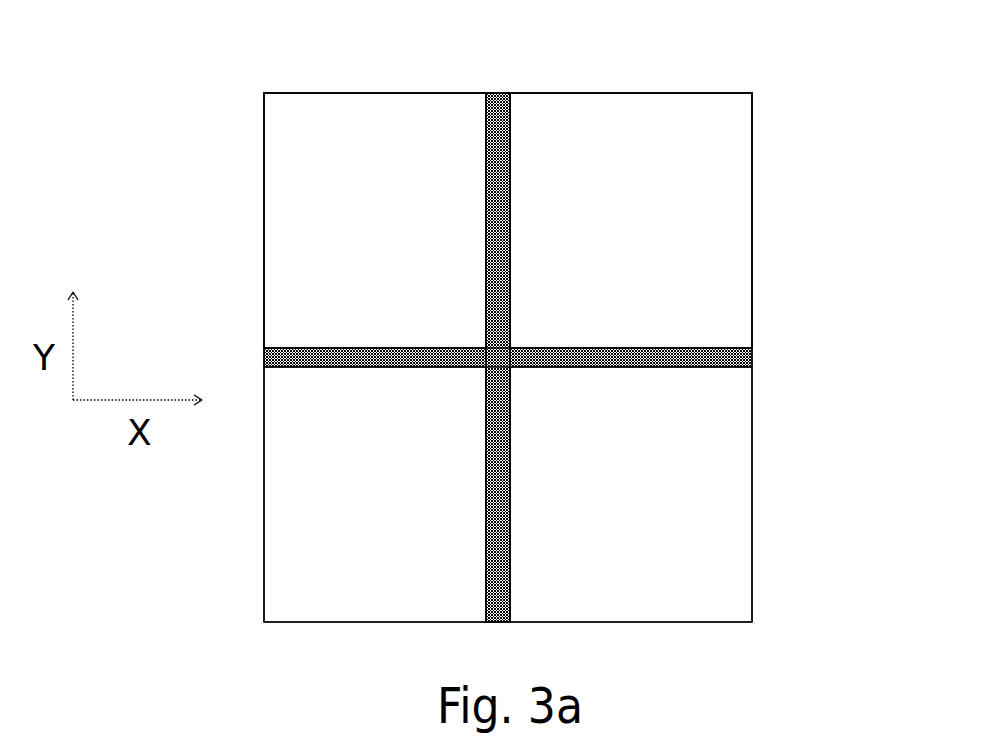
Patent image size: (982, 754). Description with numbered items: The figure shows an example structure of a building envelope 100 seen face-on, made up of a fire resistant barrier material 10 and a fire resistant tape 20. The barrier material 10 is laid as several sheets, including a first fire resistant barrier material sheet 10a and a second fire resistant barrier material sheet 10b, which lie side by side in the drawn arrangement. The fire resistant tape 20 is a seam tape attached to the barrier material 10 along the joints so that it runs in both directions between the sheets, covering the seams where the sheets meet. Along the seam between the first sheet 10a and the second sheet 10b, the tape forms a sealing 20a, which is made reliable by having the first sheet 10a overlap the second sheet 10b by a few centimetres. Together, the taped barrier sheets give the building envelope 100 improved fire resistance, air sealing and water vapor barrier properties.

The building envelope 100 is at (172, 58).
The fire resistant barrier material 10 is at (398, 523).
The first fire resistant barrier material sheet 10a is at (402, 250).
The second fire resistant barrier material sheet 10b is at (655, 250).
The fire resistant tape 20 is at (722, 352).
The sealing 20a is at (496, 125).